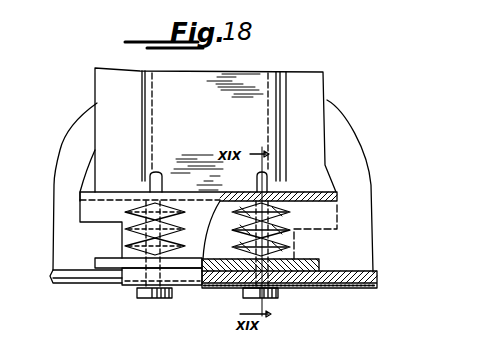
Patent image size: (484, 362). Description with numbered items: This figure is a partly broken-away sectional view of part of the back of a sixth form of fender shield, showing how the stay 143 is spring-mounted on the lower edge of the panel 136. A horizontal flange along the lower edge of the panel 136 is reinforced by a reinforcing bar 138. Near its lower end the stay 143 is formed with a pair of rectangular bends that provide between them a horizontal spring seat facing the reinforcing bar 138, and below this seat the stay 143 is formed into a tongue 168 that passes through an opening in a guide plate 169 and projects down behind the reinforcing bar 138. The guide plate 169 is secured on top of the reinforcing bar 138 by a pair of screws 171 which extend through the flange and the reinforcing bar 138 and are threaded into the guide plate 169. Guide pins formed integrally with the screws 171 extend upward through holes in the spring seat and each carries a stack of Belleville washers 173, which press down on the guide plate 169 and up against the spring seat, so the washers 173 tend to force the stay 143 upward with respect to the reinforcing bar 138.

The panel 136 is at (72, 147).
The reinforcing bar 138 is at (376, 278).
The stay 143 is at (312, 87).
The tongue 168 is at (123, 278).
The guide plate 169 is at (108, 263).
The screws 171 is at (146, 299).
The Belleville washers 173 is at (268, 225).